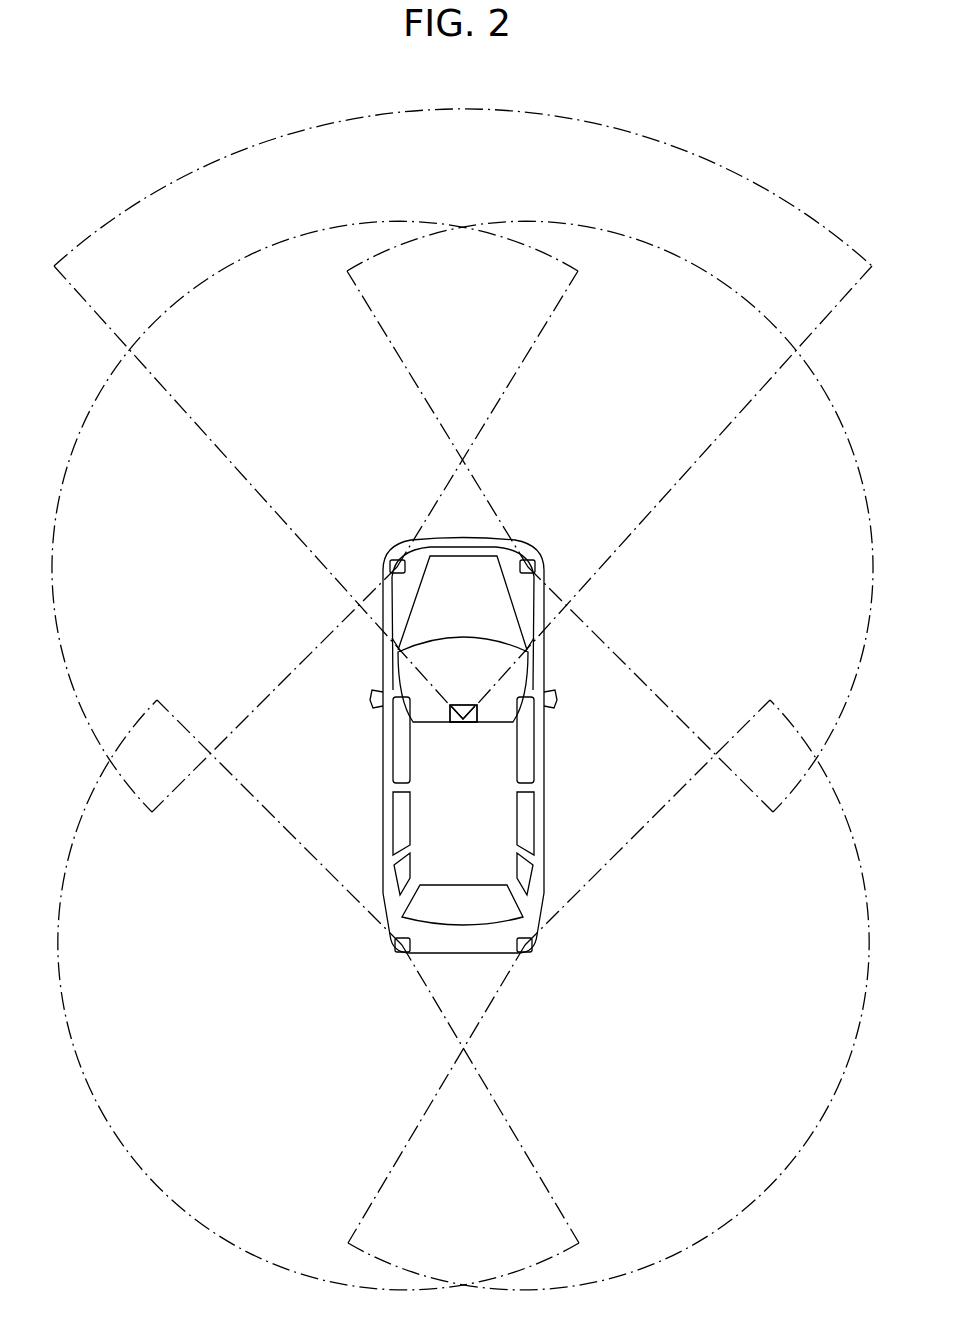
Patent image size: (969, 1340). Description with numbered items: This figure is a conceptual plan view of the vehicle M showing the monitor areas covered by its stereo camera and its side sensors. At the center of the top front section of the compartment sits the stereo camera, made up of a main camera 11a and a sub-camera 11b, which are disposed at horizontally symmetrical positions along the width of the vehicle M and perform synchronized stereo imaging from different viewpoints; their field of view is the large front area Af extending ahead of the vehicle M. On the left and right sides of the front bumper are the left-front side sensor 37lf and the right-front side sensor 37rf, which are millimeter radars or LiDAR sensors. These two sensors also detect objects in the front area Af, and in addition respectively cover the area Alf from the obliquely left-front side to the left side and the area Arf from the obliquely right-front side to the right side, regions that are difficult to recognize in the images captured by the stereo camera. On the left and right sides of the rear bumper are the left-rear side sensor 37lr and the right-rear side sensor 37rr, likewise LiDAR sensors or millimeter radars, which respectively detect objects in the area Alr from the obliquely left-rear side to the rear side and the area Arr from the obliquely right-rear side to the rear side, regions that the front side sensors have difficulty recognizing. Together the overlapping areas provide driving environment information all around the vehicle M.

The front area Af is at (225, 157).
The area from the obliquely left-front side to the left side Alf is at (98, 391).
The area from the obliquely right-front side to the right side Arf is at (825, 388).
The area from the obliquely left-rear side to the rear side Alr is at (123, 1155).
The area from the obliquely right-rear side to the rear side Arr is at (798, 1157).
The vehicle M is at (383, 768).
The main camera 11a is at (463, 723).
The sub-camera 11b is at (463, 723).
The left-front side sensor 37lf is at (398, 558).
The right-front side sensor 37rf is at (529, 558).
The left-rear side sensor 37lr is at (400, 954).
The right-rear side sensor 37rr is at (523, 954).